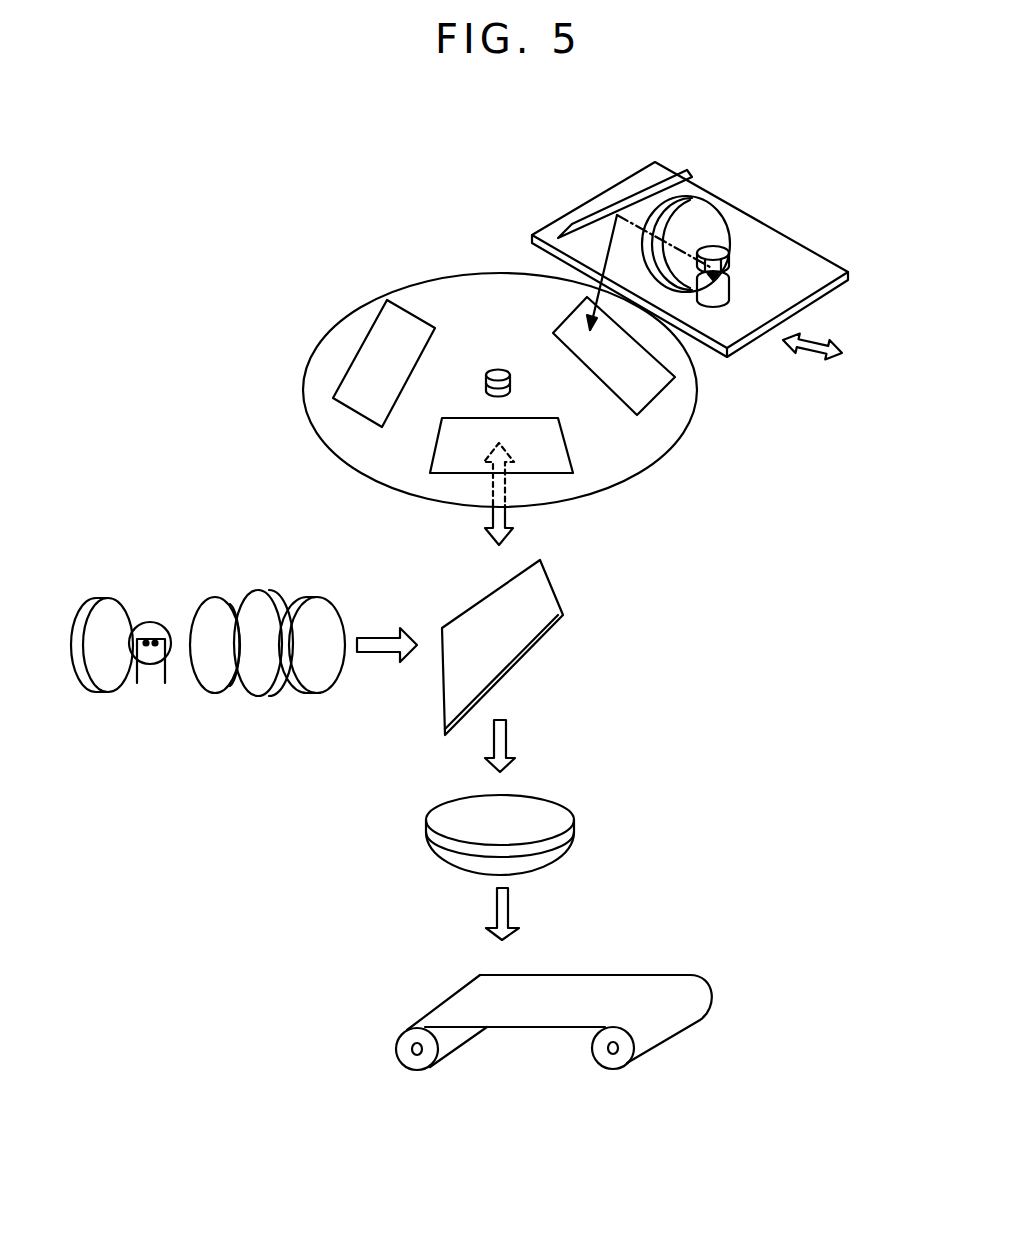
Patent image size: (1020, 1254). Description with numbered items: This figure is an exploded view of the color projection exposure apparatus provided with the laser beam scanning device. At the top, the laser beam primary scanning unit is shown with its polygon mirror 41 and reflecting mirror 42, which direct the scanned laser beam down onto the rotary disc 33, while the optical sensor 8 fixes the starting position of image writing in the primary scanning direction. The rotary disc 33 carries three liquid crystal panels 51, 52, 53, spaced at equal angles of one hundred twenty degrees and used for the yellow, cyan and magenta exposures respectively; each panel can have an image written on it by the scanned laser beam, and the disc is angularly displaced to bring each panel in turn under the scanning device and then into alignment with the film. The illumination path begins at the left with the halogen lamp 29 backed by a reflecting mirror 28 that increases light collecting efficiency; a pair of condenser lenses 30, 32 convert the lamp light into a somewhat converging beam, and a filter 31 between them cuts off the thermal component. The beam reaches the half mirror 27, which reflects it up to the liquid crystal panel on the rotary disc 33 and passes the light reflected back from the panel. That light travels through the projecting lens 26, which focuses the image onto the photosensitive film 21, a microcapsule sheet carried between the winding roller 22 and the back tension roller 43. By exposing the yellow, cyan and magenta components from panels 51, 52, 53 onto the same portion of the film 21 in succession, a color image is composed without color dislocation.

The optical sensor 8 is at (685, 172).
The photosensitive film 21 is at (628, 973).
The winding roller 22 is at (415, 1073).
The projecting lens 26 is at (555, 813).
The half mirror 27 is at (528, 630).
The reflecting mirror 28 is at (107, 687).
The halogen lamp 29 is at (140, 622).
The condenser lens 30 is at (210, 688).
The filter 31 is at (265, 692).
The condenser lens 32 is at (308, 607).
The rotary disc 33 is at (652, 447).
The polygon mirror 41 is at (710, 252).
The reflecting mirror 42 is at (575, 230).
The back tension roller 43 is at (618, 1067).
The liquid crystal panel 51 is at (643, 397).
The liquid crystal panel 52 is at (557, 477).
The liquid crystal panel 53 is at (363, 348).